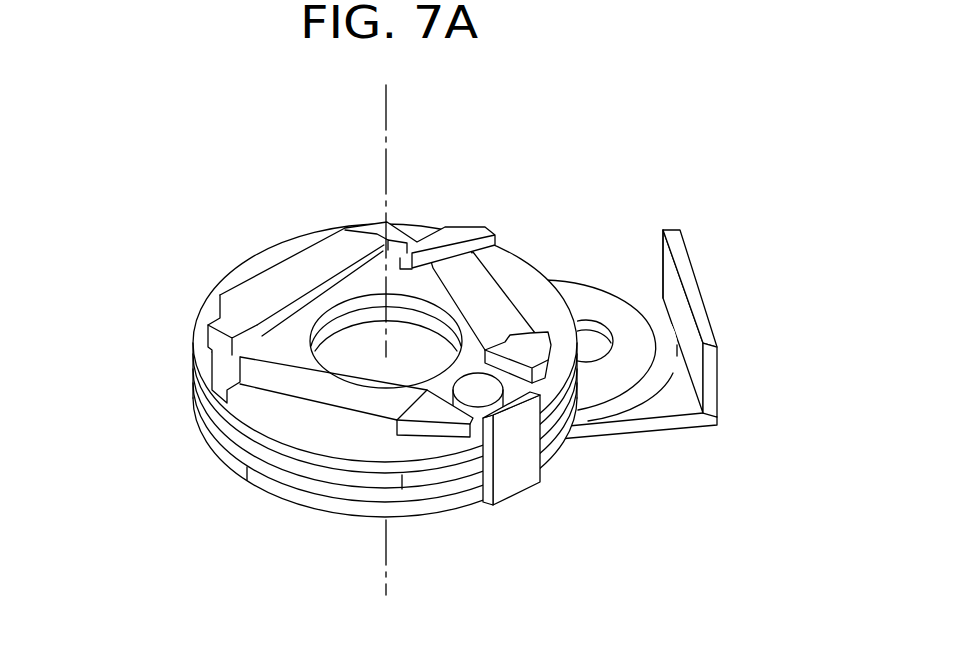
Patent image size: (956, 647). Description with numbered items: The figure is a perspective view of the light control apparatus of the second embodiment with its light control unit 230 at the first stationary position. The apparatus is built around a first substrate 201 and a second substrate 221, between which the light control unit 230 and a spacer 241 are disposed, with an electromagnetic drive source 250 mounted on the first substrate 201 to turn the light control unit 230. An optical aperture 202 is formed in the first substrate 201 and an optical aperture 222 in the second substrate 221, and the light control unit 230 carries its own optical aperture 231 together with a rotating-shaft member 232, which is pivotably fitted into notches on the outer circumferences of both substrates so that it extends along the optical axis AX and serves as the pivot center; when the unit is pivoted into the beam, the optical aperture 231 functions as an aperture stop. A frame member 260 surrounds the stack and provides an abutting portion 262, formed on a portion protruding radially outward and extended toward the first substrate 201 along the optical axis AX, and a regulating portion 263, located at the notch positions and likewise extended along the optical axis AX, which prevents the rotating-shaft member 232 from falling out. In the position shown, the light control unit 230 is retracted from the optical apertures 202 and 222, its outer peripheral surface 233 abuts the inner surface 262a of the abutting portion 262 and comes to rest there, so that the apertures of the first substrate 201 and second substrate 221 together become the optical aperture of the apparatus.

The first substrate 201 is at (327, 403).
The optical aperture 202 is at (420, 308).
The second substrate 221 is at (306, 486).
The optical aperture 222 is at (292, 279).
The light control unit 230 is at (621, 285).
The optical aperture 231 is at (595, 327).
The rotating-shaft member 232 is at (518, 386).
The outer peripheral surface 233 is at (660, 386).
The spacer 241 is at (237, 437).
The electromagnetic drive source 250 is at (422, 313).
The frame member 260 is at (347, 508).
The abutting portion 262 is at (690, 273).
The inner surface 262a is at (668, 283).
The regulating portion 263 is at (507, 470).
The optical axis AX is at (386, 108).